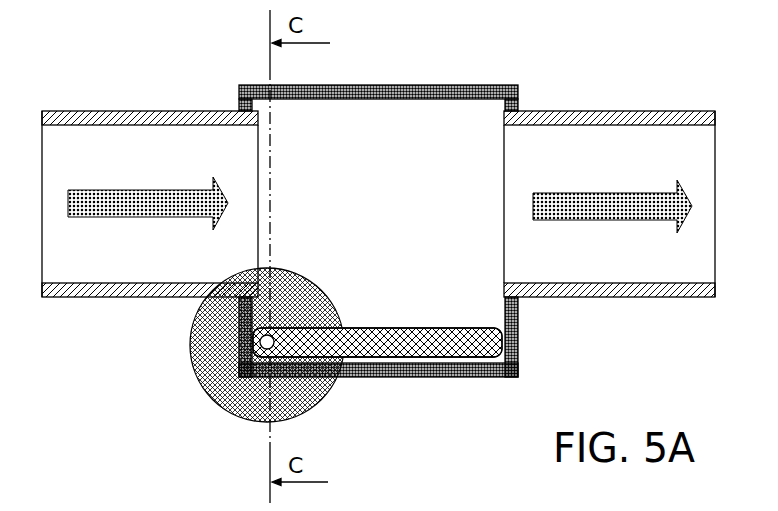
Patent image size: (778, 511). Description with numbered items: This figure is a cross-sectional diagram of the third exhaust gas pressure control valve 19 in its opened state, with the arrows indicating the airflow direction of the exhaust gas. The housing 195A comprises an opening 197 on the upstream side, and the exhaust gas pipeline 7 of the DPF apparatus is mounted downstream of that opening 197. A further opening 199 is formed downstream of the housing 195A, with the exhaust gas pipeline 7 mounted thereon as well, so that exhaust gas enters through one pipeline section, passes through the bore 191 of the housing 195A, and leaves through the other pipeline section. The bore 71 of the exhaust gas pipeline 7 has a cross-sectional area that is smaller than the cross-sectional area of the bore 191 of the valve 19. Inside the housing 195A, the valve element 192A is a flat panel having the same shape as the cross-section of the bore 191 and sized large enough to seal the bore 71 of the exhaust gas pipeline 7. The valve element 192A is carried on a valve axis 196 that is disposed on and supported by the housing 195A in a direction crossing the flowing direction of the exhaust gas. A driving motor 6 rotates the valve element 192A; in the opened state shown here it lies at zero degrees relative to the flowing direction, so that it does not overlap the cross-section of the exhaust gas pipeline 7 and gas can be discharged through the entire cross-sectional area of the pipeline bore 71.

The third exhaust gas pressure control valve 19 is at (381, 193).
The housing 195A is at (378, 74).
The opening 197 is at (208, 227).
The opening 199 is at (551, 226).
The bore 191 is at (381, 204).
The valve element 192A is at (377, 327).
The valve axis 196 is at (300, 302).
The driving motor 6 is at (186, 437).
The exhaust gas pipeline 7 is at (378, 225).
The bore 71 is at (380, 183).